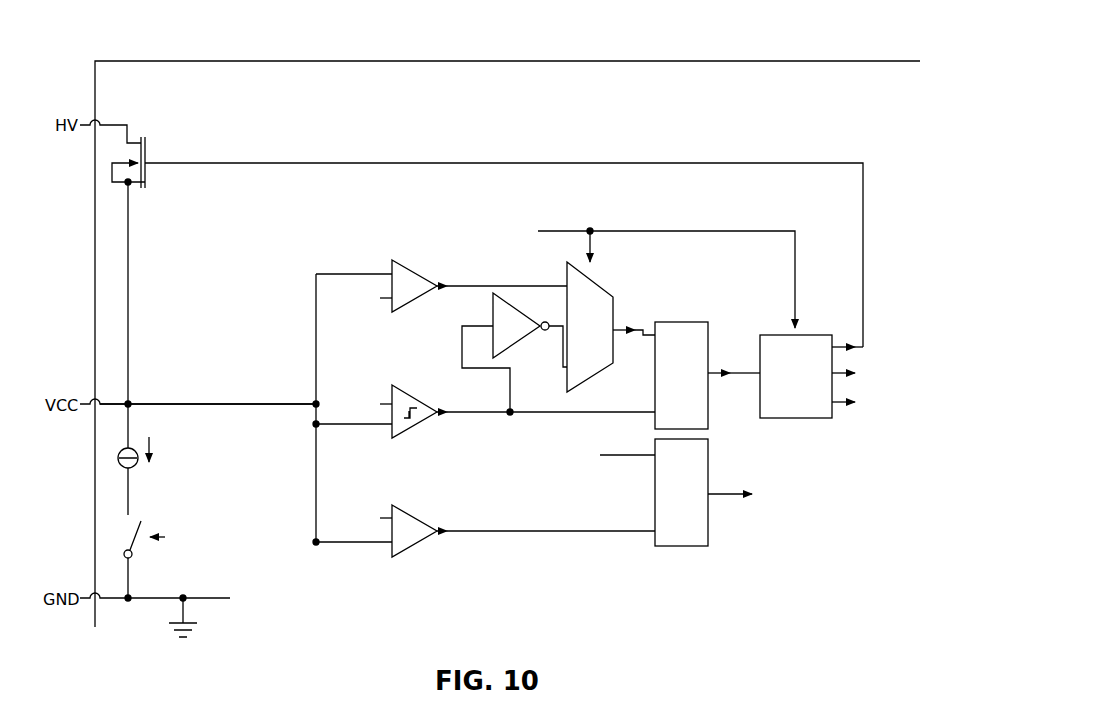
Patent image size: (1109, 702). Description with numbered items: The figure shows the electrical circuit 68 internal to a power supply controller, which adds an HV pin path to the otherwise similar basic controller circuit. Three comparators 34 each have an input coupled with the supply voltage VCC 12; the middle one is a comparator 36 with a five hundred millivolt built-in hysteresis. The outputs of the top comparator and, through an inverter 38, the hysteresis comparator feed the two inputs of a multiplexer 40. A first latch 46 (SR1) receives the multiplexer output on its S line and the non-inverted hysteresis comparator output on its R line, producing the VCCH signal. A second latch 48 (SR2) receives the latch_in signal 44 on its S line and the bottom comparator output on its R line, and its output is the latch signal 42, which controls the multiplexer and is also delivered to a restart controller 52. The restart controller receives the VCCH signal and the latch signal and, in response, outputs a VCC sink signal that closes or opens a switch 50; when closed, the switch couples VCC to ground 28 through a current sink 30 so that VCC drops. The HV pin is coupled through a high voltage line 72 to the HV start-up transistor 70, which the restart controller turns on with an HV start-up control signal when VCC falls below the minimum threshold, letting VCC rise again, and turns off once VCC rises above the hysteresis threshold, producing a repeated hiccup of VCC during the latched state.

The electrical circuit 68 is at (878, 36).
The high voltage (HV) line 72 is at (112, 124).
The HV start-up transistor 70 is at (150, 184).
The supply voltage (VCC) 12 is at (115, 399).
The current sink 30 is at (118, 462).
The switch 50 is at (131, 548).
The ground (GND) 28 is at (151, 600).
The comparators 34 is at (412, 265).
The comparator with built-in hysteresis 36 is at (410, 433).
The inverter 38 is at (520, 306).
The multiplexer (MUX) 40 is at (622, 320).
The latch signal 42 is at (598, 241).
The first latch (SR1) 46 is at (700, 322).
The second latch (SR2) 48 is at (683, 547).
The latch_in signal 44 is at (625, 458).
The restart controller 52 is at (808, 335).